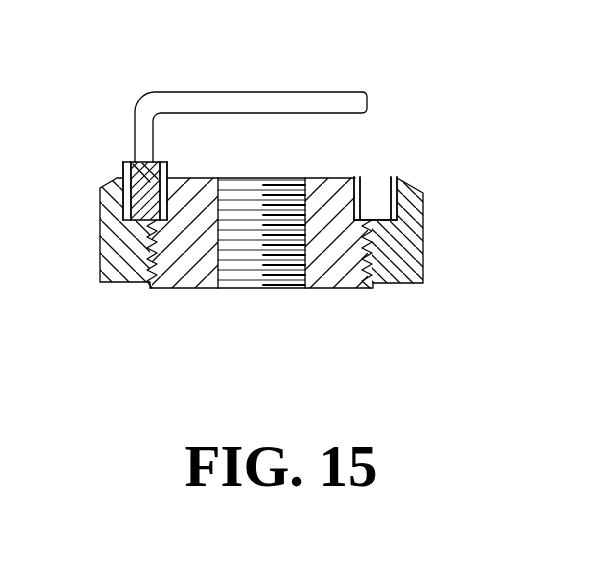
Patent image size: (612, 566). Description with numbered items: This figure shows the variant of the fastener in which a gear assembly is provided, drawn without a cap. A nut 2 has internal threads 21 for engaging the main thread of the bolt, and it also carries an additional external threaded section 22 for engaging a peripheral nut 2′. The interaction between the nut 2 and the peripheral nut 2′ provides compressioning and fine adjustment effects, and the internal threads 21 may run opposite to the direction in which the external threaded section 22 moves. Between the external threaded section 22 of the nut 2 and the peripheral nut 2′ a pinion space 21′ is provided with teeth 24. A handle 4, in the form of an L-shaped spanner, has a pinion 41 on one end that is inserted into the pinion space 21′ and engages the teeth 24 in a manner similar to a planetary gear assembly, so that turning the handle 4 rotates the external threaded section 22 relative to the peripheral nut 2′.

The nut 2 is at (325, 277).
The peripheral nut 2′ is at (412, 253).
The internal threads 21 is at (245, 257).
The pinion space with teeth 21′ is at (398, 203).
The external threaded section 22 is at (158, 248).
The teeth 24 is at (357, 193).
The handle 4 is at (238, 92).
The pinion 41 is at (122, 163).